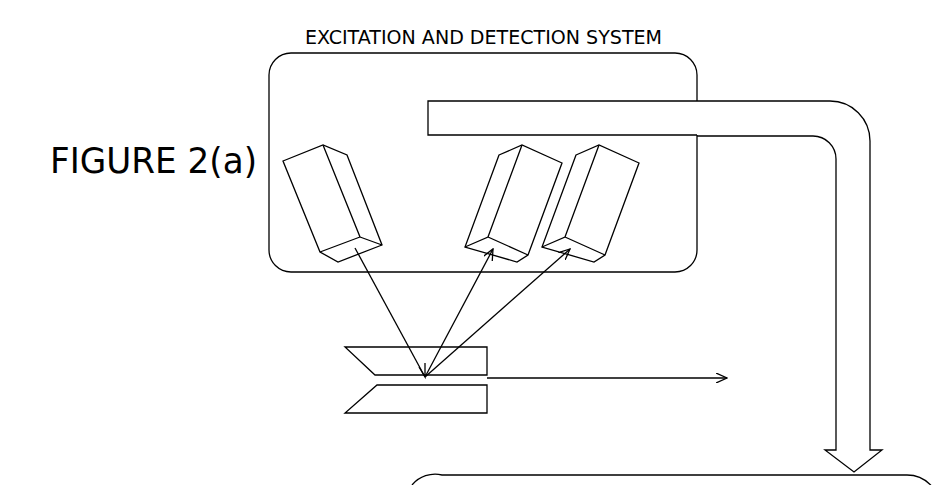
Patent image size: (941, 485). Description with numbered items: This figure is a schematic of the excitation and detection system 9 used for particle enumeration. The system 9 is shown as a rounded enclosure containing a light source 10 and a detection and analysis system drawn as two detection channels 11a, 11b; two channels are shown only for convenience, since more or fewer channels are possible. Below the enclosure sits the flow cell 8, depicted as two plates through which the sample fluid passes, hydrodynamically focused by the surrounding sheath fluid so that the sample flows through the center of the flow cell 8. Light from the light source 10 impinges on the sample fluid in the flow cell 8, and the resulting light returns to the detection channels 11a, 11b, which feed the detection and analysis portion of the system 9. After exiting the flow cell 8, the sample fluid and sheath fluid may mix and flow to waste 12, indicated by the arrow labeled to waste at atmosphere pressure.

The flow cell 8 is at (354, 414).
The excitation and detection system 9 is at (697, 153).
The light source 10 is at (363, 197).
The detection channel 11a is at (493, 261).
The detection channel 11b is at (532, 261).
The waste 12 is at (623, 350).